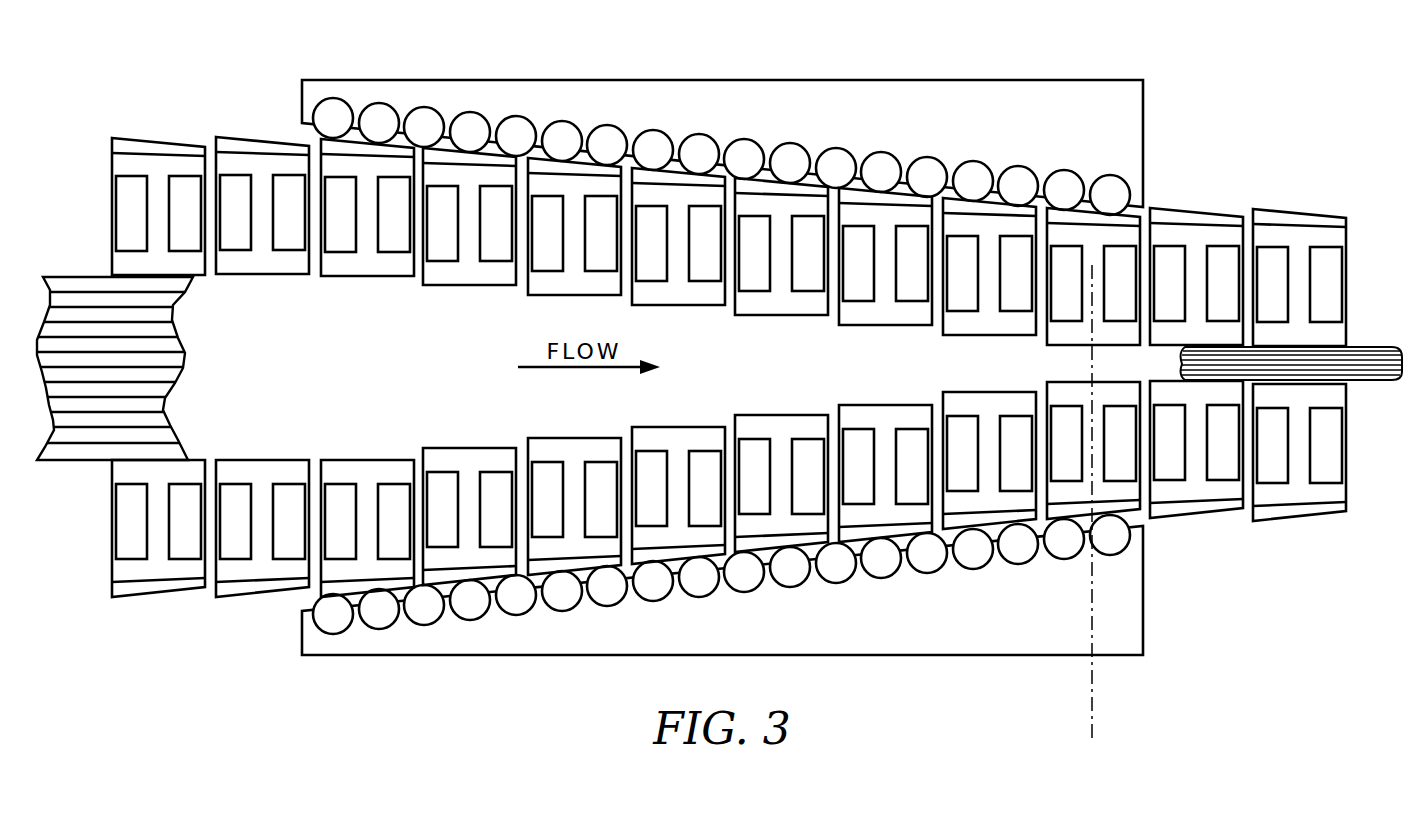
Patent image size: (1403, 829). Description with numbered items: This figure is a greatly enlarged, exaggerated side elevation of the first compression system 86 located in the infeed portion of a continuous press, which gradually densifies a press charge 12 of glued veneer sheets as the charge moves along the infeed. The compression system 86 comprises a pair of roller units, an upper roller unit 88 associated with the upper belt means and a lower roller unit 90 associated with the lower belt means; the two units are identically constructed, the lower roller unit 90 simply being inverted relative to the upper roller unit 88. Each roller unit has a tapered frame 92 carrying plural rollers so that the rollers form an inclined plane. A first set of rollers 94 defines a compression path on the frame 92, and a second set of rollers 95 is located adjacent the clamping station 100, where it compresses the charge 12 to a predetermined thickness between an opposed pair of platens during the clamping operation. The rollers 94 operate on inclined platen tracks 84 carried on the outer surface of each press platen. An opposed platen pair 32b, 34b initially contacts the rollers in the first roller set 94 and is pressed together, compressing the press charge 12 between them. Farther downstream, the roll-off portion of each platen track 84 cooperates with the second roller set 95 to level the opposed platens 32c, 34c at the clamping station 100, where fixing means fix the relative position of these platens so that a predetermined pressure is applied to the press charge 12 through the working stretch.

The press charge 12 is at (96, 466).
The press platen of first set 32b is at (353, 277).
The press platen of first set 32c is at (1103, 272).
The press platen of second set 34b is at (248, 460).
The press platen of second set 34c is at (1110, 447).
The inclined platen track 84 is at (729, 369).
The first compression system 86 is at (1246, 150).
The upper roller unit 88 is at (1153, 129).
The lower roller unit 90 is at (1158, 602).
The tapered frame 92 is at (765, 367).
The first set of rollers 94 is at (721, 371).
The second set of rollers 95 is at (1063, 170).
The clamping station 100 is at (1094, 667).